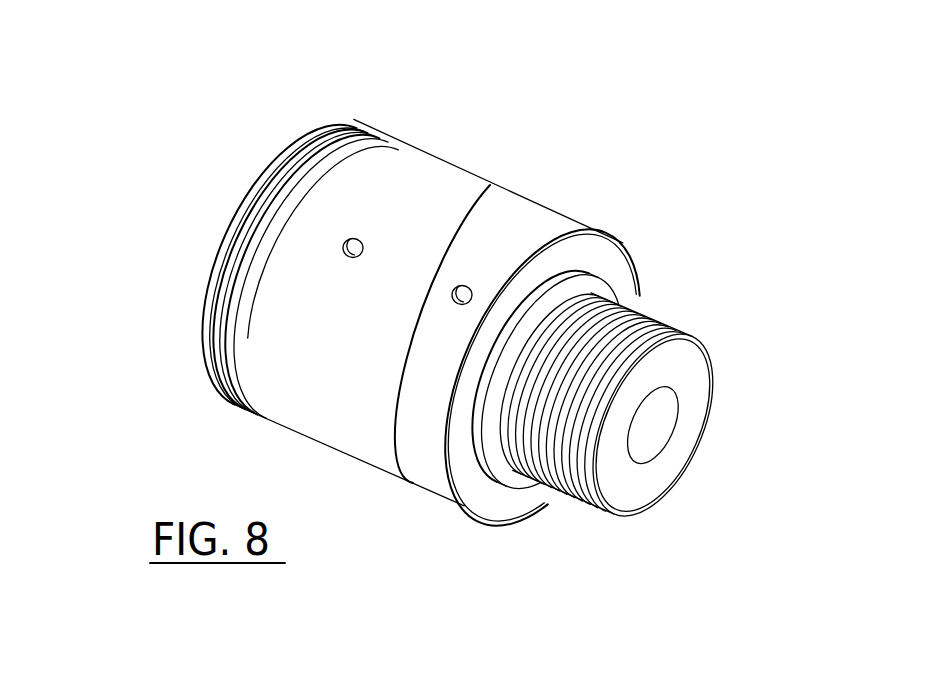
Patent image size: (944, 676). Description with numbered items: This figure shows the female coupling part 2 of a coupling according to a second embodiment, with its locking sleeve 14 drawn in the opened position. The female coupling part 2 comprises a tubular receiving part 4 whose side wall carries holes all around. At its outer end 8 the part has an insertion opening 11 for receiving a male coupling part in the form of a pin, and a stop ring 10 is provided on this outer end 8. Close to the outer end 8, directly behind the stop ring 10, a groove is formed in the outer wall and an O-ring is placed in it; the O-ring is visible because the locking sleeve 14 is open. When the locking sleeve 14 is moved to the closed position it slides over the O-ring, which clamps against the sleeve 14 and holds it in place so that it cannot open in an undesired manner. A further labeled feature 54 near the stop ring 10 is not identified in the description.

The female coupling part 2 is at (670, 148).
The tubular receiving part 4 is at (606, 258).
The outer end 8 is at (316, 78).
The stop ring 10 is at (287, 150).
The insertion opening 11 is at (182, 212).
The locking sleeve 14 is at (409, 163).
The groove 54 is at (338, 143).